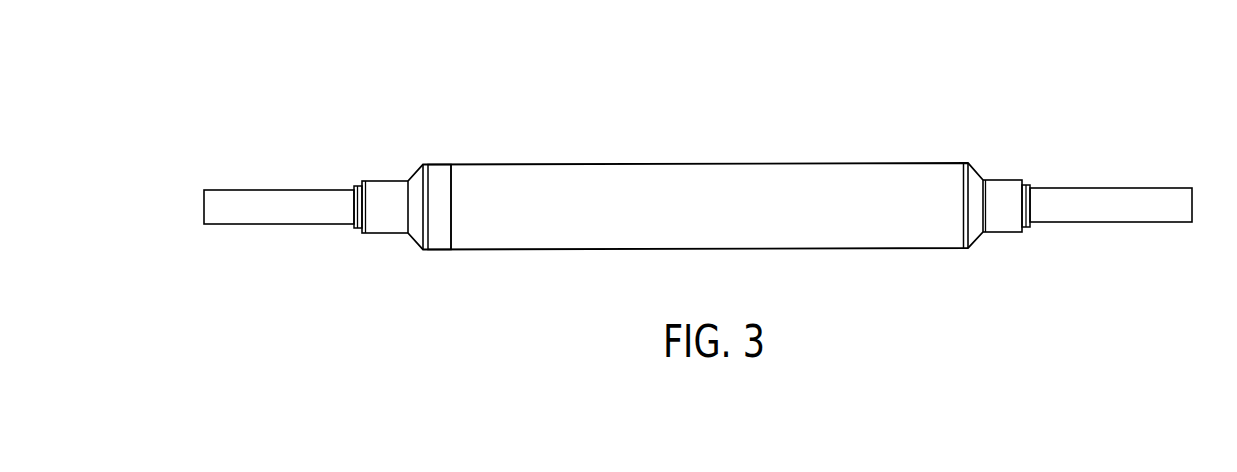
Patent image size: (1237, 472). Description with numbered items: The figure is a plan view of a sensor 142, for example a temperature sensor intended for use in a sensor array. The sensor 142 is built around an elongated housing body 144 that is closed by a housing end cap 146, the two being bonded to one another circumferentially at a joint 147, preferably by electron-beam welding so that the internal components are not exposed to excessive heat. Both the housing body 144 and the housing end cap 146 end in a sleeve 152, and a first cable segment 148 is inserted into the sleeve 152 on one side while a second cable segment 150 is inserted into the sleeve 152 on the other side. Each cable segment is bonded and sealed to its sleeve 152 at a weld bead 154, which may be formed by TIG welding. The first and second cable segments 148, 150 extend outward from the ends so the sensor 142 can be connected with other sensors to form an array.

The sensor 142 is at (903, 89).
The housing body 144 is at (660, 162).
The housing end cap 146 is at (440, 170).
The joint 147 is at (453, 162).
The first cable segment 148 is at (268, 197).
The second cable segment 150 is at (1133, 193).
The sleeve 152 is at (390, 197).
The weld bead 154 is at (355, 232).